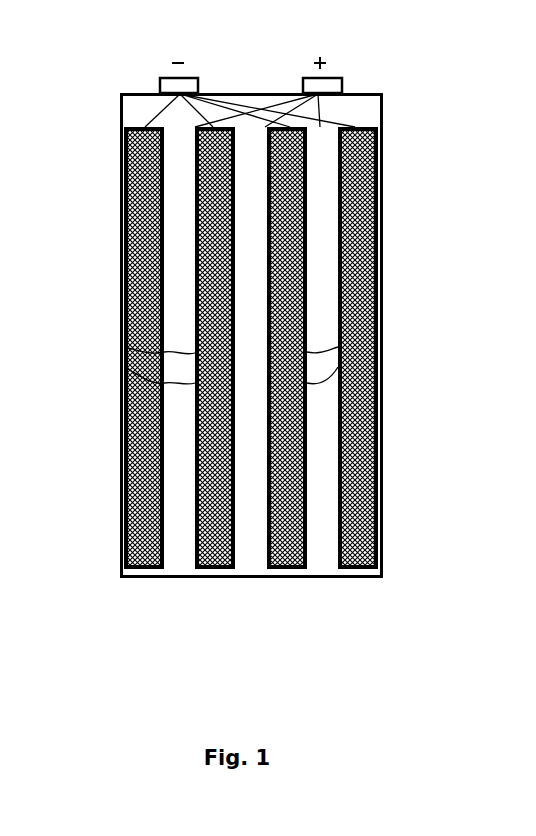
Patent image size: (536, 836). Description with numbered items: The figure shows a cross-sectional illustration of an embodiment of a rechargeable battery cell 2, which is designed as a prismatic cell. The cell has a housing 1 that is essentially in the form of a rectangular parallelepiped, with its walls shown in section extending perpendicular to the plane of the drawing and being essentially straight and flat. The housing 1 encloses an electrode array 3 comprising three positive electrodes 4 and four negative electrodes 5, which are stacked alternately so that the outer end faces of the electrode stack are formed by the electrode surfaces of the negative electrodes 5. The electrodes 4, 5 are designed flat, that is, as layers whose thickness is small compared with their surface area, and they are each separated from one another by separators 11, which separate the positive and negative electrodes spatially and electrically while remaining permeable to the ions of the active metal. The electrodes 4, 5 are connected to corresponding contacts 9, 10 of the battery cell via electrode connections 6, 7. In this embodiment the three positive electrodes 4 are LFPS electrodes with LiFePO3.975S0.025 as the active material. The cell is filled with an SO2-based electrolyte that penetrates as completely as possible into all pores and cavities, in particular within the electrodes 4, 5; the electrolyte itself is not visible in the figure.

The housing 1 is at (383, 188).
The rechargeable battery cell 2 is at (112, 247).
The electrode array 3 is at (321, 267).
The positive electrode 4 is at (180, 558).
The negative electrode 5 is at (147, 574).
The electrode connection 6 is at (335, 103).
The electrode connection 7 is at (160, 103).
The contact 9 is at (331, 78).
The contact 10 is at (190, 78).
The separator 11 is at (124, 347).